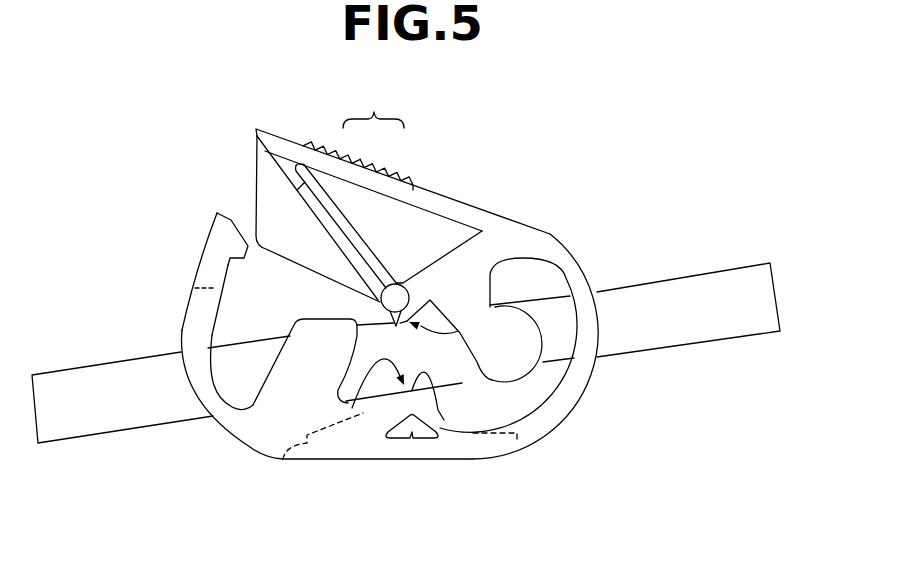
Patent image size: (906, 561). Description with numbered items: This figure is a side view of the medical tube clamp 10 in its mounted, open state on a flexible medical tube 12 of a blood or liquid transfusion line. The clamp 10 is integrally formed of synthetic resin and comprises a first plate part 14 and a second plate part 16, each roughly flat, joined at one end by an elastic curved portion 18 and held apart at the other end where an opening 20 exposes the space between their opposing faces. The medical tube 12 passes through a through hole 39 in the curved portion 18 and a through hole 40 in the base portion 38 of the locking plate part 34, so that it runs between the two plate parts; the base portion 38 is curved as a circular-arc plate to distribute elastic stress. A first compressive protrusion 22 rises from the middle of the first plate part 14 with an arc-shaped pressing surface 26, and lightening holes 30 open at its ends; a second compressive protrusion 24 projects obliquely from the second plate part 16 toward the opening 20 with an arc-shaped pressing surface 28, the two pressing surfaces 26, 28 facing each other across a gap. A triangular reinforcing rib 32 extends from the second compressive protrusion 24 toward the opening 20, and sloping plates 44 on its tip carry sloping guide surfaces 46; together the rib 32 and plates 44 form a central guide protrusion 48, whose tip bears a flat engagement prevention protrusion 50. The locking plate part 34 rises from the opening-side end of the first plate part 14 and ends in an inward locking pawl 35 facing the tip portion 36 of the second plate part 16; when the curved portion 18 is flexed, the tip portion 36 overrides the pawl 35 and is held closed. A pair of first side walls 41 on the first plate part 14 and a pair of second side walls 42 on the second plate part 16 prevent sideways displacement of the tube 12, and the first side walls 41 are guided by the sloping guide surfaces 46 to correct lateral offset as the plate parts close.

The medical tube clamp 10 is at (573, 95).
The medical tube 12 is at (649, 272).
The first plate part 14 is at (370, 457).
The second plate part 16 is at (481, 210).
The curved portion 18 is at (597, 342).
The opening 20 is at (224, 189).
The first compressive protrusion 22 is at (377, 365).
The second compressive protrusion 24 is at (459, 331).
The pressing surface 26 is at (444, 420).
The pressing surface 28 is at (400, 322).
The lightening hole 30 is at (413, 440).
The reinforcing rib 32 is at (365, 213).
The locking plate part 34 is at (207, 260).
The locking pawl 35 is at (235, 247).
The tip portion 36 is at (265, 133).
The base portion 38 is at (222, 417).
The through hole 39 is at (518, 256).
The through hole 40 is at (286, 458).
The first side wall 41 is at (297, 365).
The second side wall 42 is at (515, 353).
The sloping plate 44 is at (328, 208).
The sloping guide surface 46 is at (289, 181).
The central guide protrusion 48 is at (373, 106).
The engagement prevention protrusion 50 is at (273, 200).